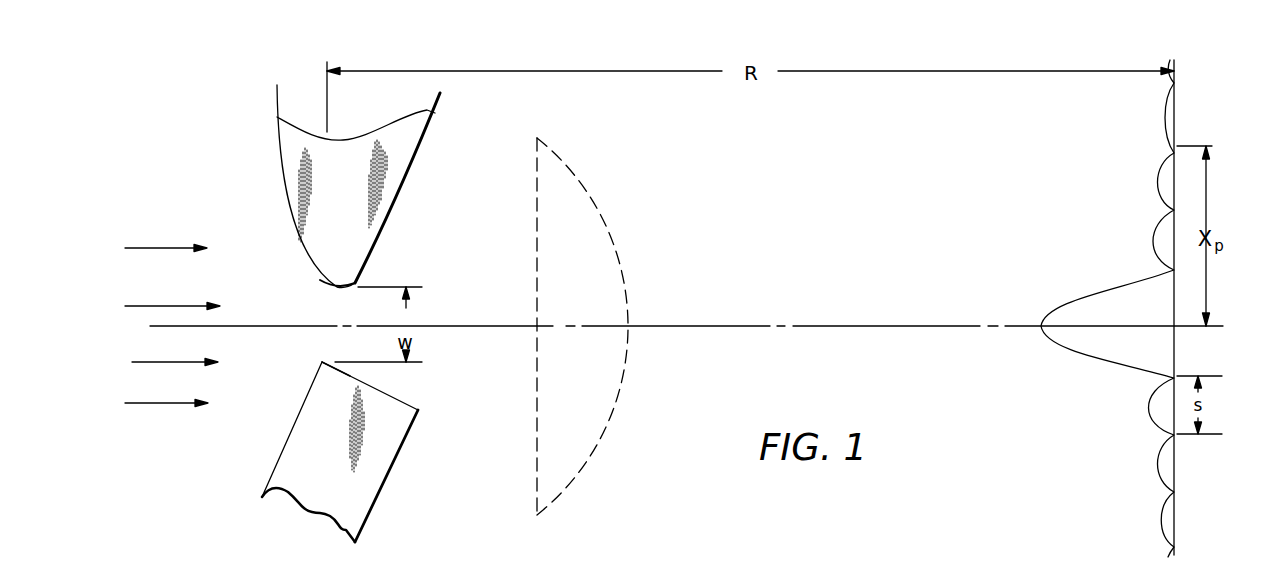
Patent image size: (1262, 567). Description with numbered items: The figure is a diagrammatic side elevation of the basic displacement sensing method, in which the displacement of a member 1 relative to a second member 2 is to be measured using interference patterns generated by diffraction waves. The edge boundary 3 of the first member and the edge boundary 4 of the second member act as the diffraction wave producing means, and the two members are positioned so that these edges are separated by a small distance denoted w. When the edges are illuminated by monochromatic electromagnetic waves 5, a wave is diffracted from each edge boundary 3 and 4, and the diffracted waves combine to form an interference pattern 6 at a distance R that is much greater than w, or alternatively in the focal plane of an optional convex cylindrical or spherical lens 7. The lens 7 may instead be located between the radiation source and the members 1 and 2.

The member 1 is at (327, 202).
The member 2 is at (350, 479).
The edge boundary 3 is at (357, 284).
The edge boundary 4 is at (322, 362).
The monochromatic electromagnetic waves 5 is at (172, 326).
The interference pattern 6 is at (1070, 349).
The convex cylindrical or spherical lens 7 is at (547, 509).